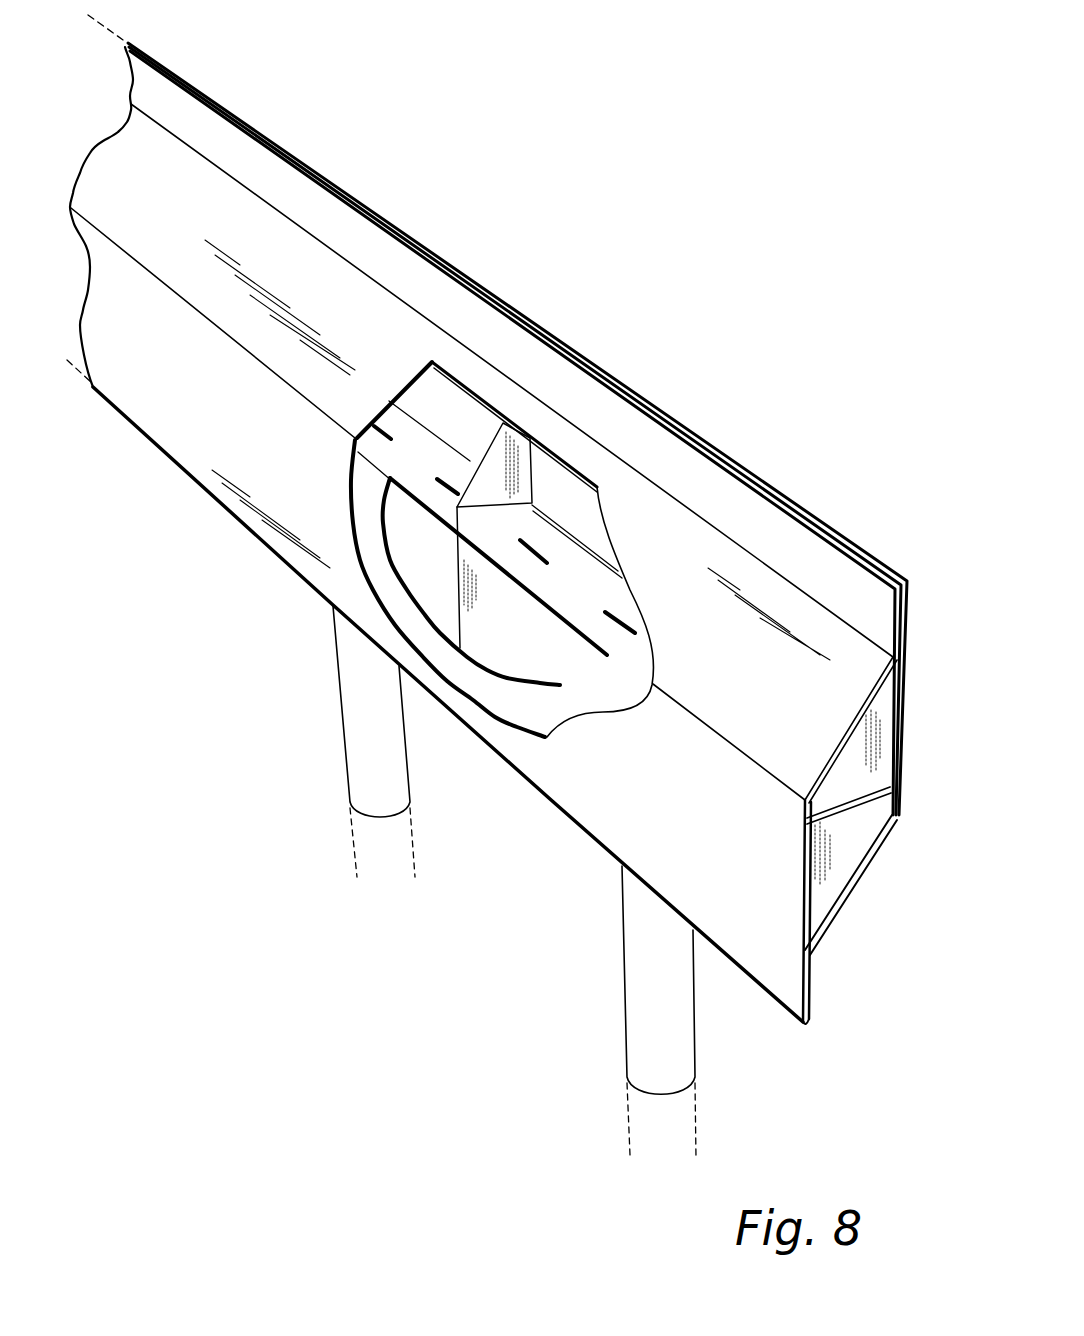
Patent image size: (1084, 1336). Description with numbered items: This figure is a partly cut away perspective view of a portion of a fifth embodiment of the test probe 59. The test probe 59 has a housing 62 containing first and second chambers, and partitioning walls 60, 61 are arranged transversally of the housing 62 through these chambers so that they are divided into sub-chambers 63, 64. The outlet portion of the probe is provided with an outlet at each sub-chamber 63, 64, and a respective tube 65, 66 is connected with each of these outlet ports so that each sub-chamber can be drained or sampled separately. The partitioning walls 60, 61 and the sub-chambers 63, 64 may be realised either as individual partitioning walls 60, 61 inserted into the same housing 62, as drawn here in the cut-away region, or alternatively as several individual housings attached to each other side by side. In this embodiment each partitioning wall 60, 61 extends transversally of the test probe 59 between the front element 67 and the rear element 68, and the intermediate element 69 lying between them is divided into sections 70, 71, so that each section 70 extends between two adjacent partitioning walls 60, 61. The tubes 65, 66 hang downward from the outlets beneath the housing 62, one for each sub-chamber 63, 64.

The test probe 59 is at (460, 248).
The partitioning wall 60 is at (847, 767).
The partitioning wall 61 is at (505, 583).
The housing 62 is at (320, 283).
The sub-chamber 63 is at (565, 507).
The sub-chamber 64 is at (462, 420).
The tube 65 is at (673, 1023).
The tube 66 is at (353, 718).
The front element 67 is at (623, 818).
The rear element 68 is at (906, 761).
The intermediate element 69 is at (884, 776).
The section 70 is at (580, 604).
The section 71 is at (413, 477).